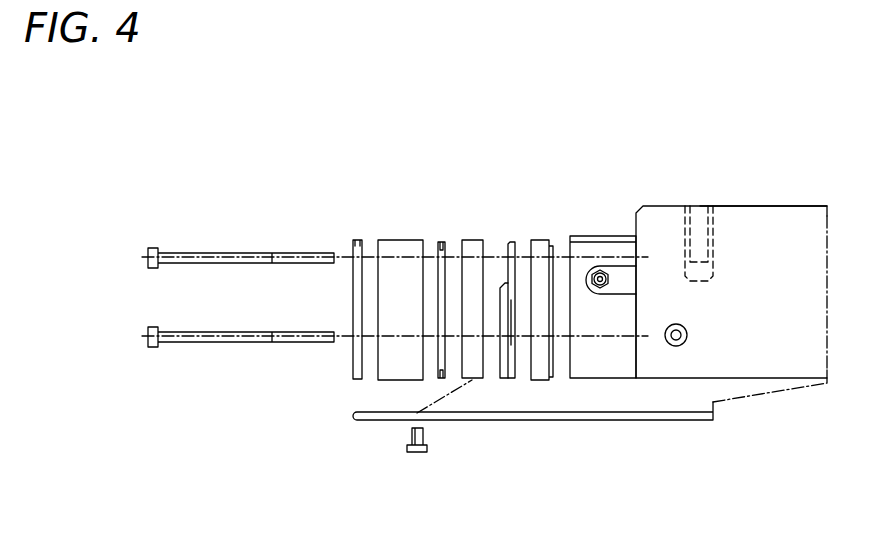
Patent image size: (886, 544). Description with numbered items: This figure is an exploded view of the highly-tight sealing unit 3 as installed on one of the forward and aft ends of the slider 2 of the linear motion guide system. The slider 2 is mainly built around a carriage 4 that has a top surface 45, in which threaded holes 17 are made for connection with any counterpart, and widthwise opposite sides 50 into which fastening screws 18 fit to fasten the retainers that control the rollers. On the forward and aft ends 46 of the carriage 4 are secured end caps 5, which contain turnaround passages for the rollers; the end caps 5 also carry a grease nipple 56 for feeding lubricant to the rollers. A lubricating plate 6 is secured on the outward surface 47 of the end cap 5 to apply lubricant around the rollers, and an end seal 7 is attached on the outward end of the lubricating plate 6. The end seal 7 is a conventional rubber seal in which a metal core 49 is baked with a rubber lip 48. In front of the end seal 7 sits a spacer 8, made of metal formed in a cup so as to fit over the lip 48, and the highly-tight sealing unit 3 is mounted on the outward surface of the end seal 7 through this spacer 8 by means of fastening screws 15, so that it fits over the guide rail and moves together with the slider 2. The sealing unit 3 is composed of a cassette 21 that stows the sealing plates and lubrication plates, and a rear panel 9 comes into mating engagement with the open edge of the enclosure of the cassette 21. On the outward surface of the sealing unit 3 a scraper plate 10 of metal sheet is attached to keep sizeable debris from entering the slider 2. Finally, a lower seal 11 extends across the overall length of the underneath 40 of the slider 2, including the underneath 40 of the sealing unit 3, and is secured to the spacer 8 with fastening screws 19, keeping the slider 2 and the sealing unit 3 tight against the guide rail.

The slider 2 is at (664, 206).
The highly-tight sealing unit 3 is at (403, 247).
The carriage 4 is at (759, 227).
The end cap 5 is at (600, 355).
The lubricating plate 6 is at (545, 245).
The end seal 7 is at (511, 248).
The spacer 8 is at (474, 246).
The rear panel 9 is at (442, 248).
The scraper plate 10 is at (356, 245).
The lower seal 11 is at (517, 421).
The fastening screw 15 is at (219, 251).
The threaded hole 17 is at (688, 228).
The fastening screw 18 is at (689, 333).
The fastening screw 19 is at (407, 437).
The cassette 21 is at (388, 314).
The underneath 40 is at (390, 383).
The top surface 45 is at (785, 207).
The forward and aft ends 46 is at (637, 360).
The outward surface 47 is at (567, 348).
The lip 48 is at (495, 378).
The metal core 49 is at (505, 285).
The widthwise opposite side 50 is at (783, 335).
The grease nipple 56 is at (600, 270).